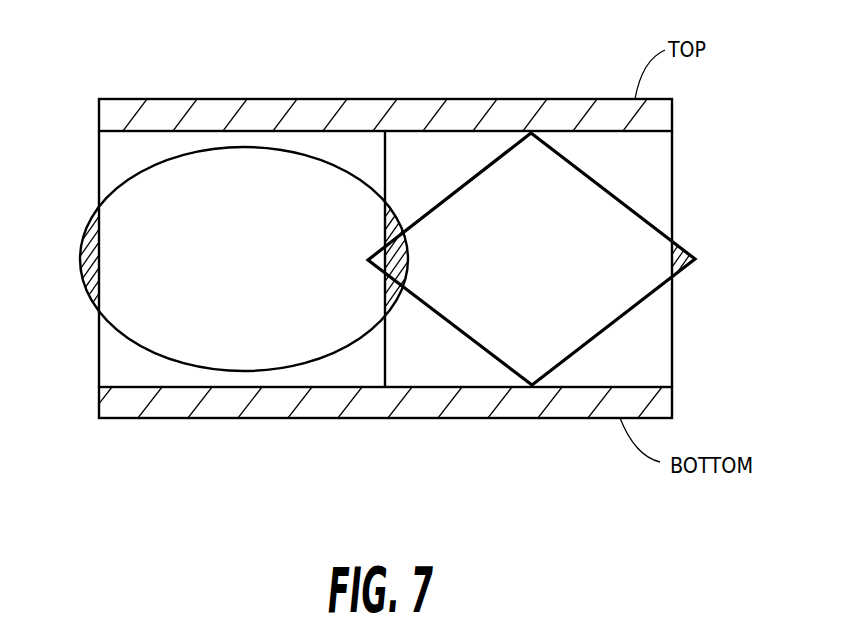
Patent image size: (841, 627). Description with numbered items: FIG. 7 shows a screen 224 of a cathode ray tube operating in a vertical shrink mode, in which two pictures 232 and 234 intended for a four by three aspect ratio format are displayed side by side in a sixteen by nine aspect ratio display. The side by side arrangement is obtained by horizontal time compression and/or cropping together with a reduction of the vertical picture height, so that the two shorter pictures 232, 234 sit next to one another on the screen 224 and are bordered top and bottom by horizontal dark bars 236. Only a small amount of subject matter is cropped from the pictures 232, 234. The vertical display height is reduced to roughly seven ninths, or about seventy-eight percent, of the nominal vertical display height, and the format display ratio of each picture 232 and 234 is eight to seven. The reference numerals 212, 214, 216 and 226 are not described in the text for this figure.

The circular cross-section member 212 is at (325, 160).
The diamond cross-section member 214 is at (457, 185).
The housing 216 is at (234, 88).
The screen 224 is at (250, 272).
The interference region 226 is at (80, 280).
The picture 232 is at (162, 192).
The picture 234 is at (513, 205).
The horizontal dark bars 236 is at (560, 110).